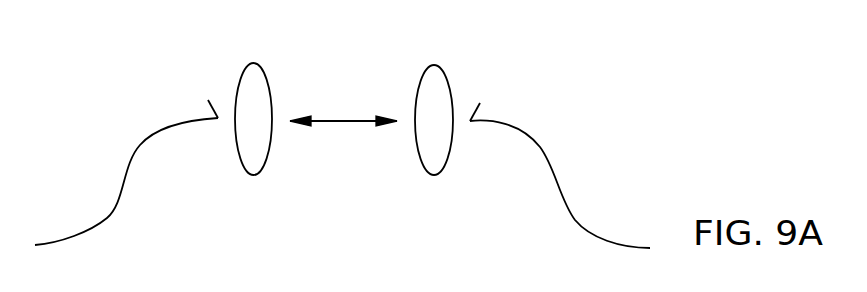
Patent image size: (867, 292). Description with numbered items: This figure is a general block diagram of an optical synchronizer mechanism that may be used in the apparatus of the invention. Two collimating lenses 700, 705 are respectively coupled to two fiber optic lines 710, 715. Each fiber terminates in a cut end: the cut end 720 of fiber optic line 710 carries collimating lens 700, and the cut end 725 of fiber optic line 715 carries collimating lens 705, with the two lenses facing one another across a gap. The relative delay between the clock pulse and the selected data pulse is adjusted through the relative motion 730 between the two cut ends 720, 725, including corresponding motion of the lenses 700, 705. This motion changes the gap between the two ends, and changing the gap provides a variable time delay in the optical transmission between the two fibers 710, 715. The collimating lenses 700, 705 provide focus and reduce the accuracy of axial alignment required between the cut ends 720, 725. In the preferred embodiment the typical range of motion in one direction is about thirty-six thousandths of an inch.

The collimating lens 700 is at (252, 65).
The collimating lens 705 is at (433, 66).
The fiber optic line 710 is at (107, 218).
The fiber optic line 715 is at (578, 222).
The cut end 720 is at (208, 93).
The cut end 725 is at (479, 95).
The relative motion 730 is at (343, 159).